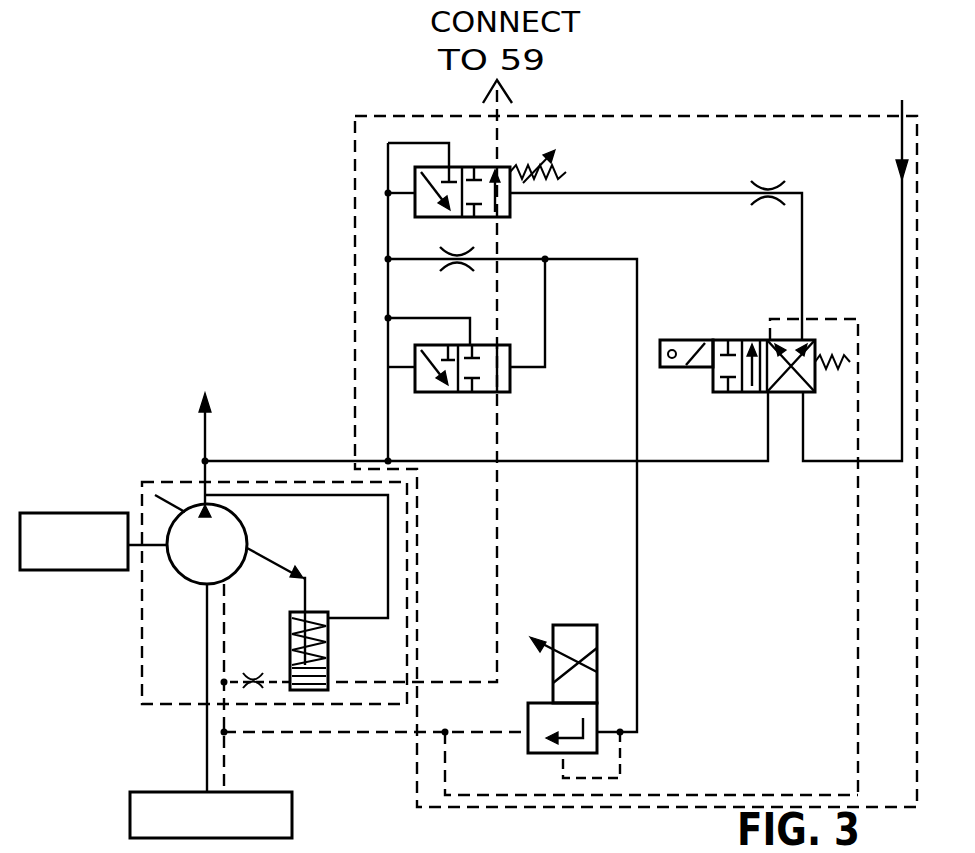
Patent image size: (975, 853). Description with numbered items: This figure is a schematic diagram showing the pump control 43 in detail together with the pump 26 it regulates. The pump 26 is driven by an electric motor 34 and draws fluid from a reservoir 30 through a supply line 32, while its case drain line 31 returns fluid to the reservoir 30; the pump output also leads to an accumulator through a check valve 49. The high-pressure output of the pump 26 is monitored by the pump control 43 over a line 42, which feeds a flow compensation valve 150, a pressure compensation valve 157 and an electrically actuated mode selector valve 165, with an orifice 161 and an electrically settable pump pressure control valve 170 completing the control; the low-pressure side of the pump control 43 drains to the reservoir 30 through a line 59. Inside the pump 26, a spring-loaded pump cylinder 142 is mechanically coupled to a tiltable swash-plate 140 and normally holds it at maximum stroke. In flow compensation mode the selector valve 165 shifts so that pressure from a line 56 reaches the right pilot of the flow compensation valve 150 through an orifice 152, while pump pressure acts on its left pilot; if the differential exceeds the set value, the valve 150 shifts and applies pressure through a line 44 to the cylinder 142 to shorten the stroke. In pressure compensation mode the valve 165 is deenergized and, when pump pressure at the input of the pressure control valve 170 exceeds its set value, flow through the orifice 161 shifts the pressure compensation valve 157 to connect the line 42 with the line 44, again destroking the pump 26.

The pump 26 is at (146, 481).
The reservoir 30 is at (199, 840).
The case drain line 31 is at (226, 757).
The supply line 32 is at (200, 735).
The electric motor 34 is at (52, 578).
The line 42 is at (270, 441).
The pump control 43 is at (351, 178).
The line 44 is at (433, 683).
The check valve 49 is at (206, 424).
The line 56 is at (898, 147).
The line 59 is at (333, 740).
The swash-plate 140 is at (272, 550).
The pump cylinder 142 is at (332, 658).
The flow compensation valve 150 is at (510, 167).
The orifice 152 is at (752, 204).
The pressure compensation valve 157 is at (510, 392).
The orifice 161 is at (424, 276).
The mode selector valve 165 is at (740, 396).
The pump pressure control valve 170 is at (600, 598).